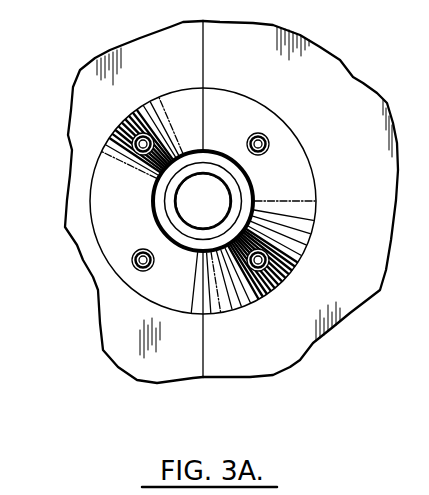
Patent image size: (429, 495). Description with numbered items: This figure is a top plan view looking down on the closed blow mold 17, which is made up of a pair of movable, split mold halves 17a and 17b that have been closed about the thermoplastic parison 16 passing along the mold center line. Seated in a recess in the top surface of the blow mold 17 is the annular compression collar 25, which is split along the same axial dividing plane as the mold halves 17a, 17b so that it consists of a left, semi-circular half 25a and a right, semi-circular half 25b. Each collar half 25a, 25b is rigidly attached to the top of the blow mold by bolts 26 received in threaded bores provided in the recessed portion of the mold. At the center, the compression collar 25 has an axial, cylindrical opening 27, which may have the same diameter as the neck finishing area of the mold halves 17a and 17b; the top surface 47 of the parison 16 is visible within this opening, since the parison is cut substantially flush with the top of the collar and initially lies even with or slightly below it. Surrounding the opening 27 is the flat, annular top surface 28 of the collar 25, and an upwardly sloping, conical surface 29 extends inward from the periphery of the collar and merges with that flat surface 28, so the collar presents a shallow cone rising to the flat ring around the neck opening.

The parison 16 is at (222, 219).
The blow mold 17 is at (231, 221).
The mold half 17a is at (160, 372).
The mold half 17b is at (280, 352).
The annular compression collar 25 is at (207, 201).
The left semi-circular half 25a is at (102, 175).
The right semi-circular half 25b is at (287, 152).
The bolts 26 is at (265, 133).
The axial cylindrical opening 27 is at (205, 184).
The flat annular top surface 28 is at (200, 189).
The conical surface 29 is at (188, 314).
The top surface of the parison 47 is at (228, 187).